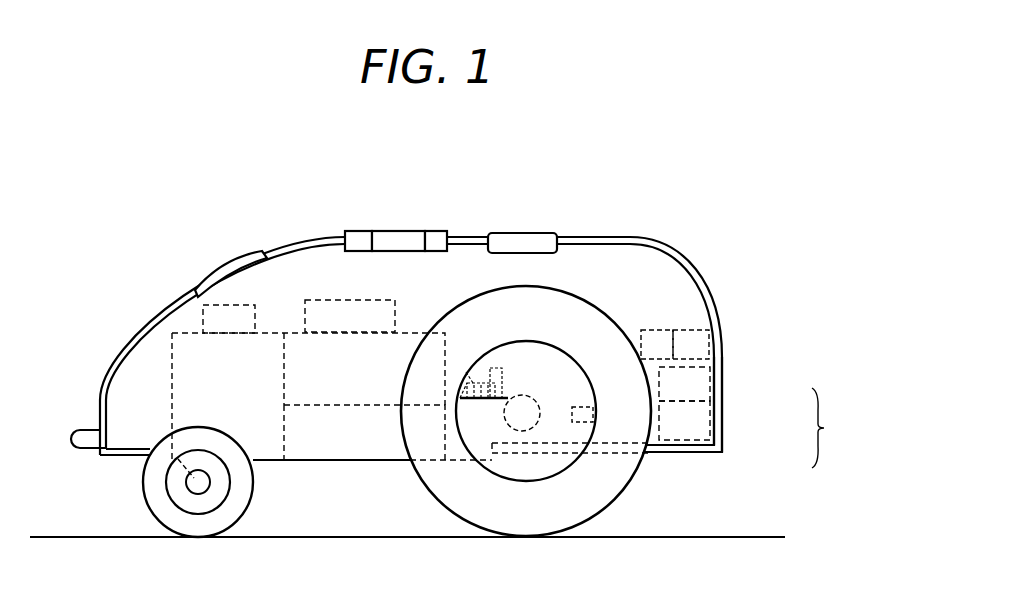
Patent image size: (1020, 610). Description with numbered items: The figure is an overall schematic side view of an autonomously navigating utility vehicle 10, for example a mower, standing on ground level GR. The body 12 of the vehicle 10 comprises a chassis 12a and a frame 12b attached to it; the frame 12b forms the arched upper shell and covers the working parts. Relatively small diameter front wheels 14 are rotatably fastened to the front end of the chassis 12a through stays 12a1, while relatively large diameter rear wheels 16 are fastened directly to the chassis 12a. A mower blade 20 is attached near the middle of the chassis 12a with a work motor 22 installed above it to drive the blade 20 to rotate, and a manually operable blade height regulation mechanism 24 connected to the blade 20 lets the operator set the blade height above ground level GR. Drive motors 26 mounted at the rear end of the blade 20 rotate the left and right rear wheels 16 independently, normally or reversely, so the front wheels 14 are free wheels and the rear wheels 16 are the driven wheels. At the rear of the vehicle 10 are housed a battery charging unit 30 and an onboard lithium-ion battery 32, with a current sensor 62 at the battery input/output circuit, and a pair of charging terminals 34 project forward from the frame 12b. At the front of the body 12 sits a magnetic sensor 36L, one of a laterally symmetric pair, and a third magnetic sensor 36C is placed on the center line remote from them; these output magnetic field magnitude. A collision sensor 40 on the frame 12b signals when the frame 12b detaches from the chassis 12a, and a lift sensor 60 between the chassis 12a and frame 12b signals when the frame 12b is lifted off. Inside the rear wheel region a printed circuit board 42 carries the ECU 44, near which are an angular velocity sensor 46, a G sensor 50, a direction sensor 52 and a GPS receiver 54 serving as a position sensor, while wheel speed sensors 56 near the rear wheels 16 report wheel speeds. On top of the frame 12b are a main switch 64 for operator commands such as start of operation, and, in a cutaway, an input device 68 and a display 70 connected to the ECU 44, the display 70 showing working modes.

The utility vehicle 10 is at (668, 243).
The body 12 is at (831, 428).
The chassis 12a is at (722, 448).
The frame 12b is at (718, 335).
The stay 12a1 is at (186, 484).
The front wheel 14 is at (148, 512).
The rear wheel 16 is at (416, 507).
The mower blade 20 is at (378, 444).
The work motor 22 is at (378, 381).
The blade height regulation mechanism 24 is at (363, 328).
The drive motor 26 is at (520, 394).
The battery charging unit 30 is at (697, 396).
The onboard battery 32 is at (697, 435).
The charging terminal 34 is at (93, 429).
The magnetic sensor 36L is at (233, 277).
The third magnetic sensor 36C is at (530, 233).
The collision sensor 40 is at (242, 330).
The printed circuit board 42 is at (481, 399).
The ECU 44 is at (462, 376).
The angular velocity sensor 46 is at (473, 367).
The G sensor 50 is at (493, 368).
The direction sensor 52 is at (503, 367).
The GPS receiver 54 is at (503, 382).
The wheel speed sensor 56 is at (591, 403).
The lift sensor 60 is at (704, 355).
The current sensor 62 is at (669, 355).
The main switch 64 is at (360, 231).
The input device 68 is at (437, 231).
The display 70 is at (403, 231).
The ground level GR is at (660, 537).